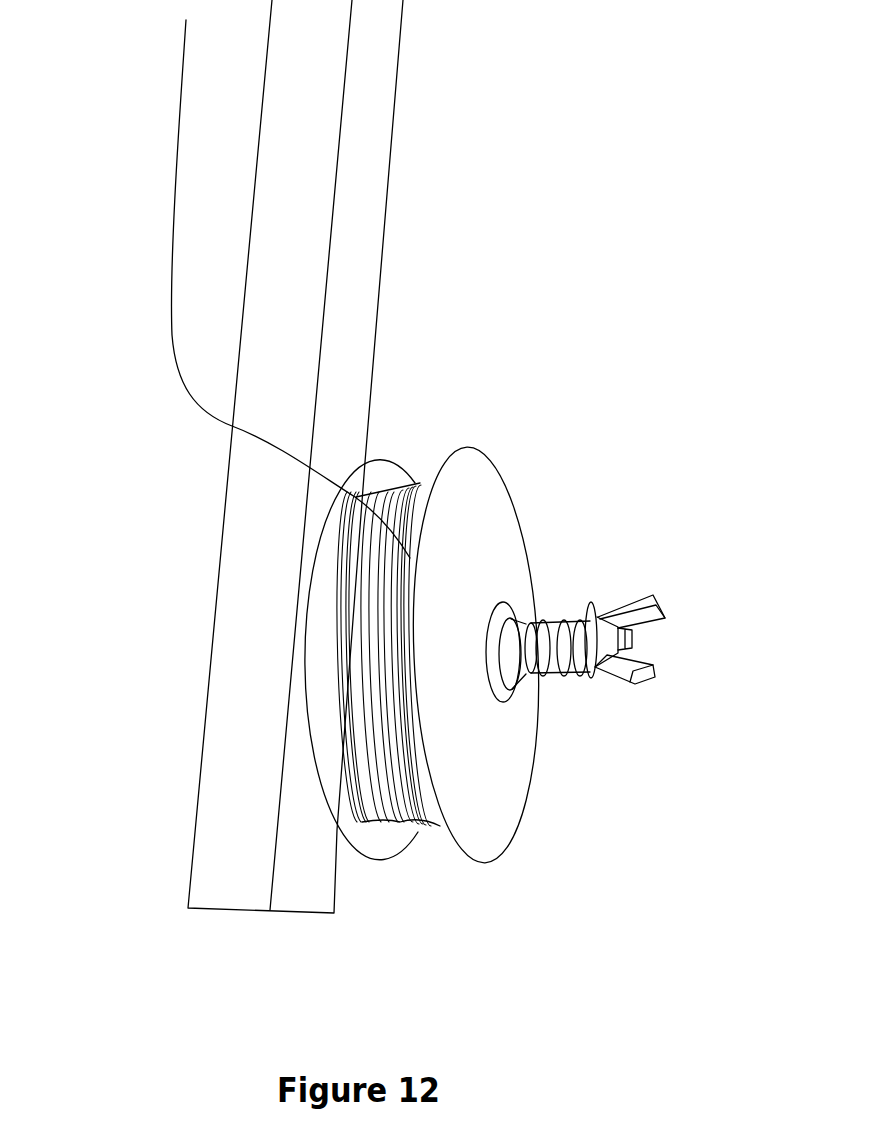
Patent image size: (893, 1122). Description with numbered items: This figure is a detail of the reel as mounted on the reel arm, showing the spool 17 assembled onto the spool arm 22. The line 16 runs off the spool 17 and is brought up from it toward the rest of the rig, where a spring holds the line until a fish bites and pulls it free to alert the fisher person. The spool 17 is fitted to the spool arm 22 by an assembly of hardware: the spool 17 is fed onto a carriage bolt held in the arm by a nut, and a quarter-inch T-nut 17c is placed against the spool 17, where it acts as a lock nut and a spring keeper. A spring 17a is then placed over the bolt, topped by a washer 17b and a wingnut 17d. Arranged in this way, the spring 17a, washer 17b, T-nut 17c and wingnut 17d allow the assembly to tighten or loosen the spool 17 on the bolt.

The line 16 is at (160, 217).
The spool arm 22 is at (373, 172).
The spool 17 is at (497, 505).
The spring 17a is at (567, 675).
The washer 17b is at (591, 603).
The T-nut 17c is at (490, 688).
The wingnut 17d is at (637, 687).